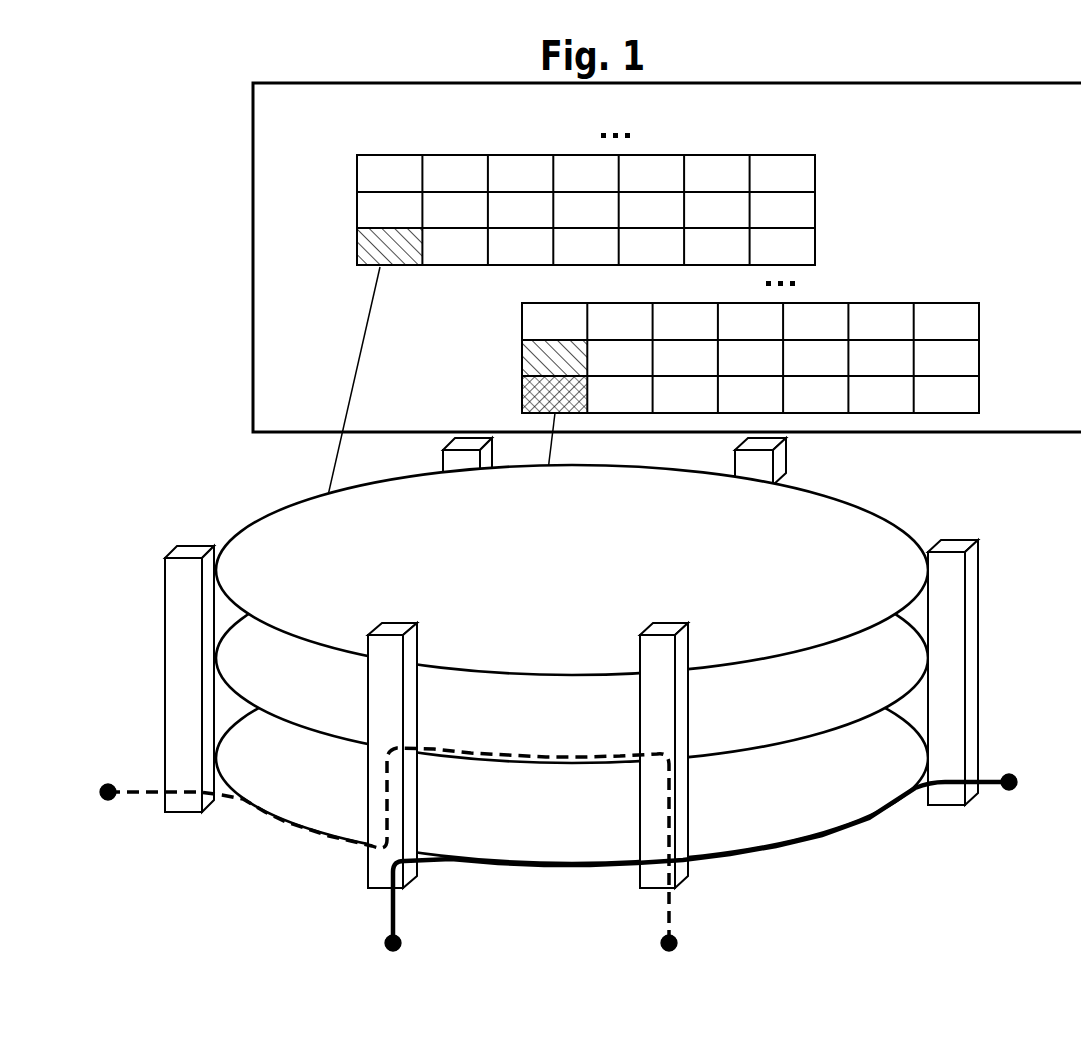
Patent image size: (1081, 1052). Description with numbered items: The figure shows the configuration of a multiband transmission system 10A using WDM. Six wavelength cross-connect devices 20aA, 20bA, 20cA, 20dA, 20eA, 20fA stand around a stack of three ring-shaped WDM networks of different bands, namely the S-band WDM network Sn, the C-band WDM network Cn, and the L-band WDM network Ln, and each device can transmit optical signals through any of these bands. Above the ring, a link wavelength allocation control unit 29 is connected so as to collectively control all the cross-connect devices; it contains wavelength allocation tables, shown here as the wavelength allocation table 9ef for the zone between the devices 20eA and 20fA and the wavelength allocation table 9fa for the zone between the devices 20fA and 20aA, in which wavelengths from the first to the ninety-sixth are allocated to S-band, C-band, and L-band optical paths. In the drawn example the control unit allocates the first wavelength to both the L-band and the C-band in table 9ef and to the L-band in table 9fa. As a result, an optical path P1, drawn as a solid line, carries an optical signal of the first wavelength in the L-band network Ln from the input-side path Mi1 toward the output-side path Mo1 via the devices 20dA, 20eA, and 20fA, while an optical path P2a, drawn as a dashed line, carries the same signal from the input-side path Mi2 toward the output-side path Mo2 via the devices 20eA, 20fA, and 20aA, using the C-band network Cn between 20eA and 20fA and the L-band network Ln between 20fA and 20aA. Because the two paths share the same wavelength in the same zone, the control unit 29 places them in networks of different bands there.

The link wavelength allocation control unit 29 is at (253, 118).
The wavelength allocation table 9fa is at (815, 205).
The wavelength allocation table 9ef is at (979, 357).
The multiband transmission system 10A is at (876, 470).
The wavelength cross-connect device 20aA is at (165, 590).
The wavelength cross-connect device 20bA is at (443, 465).
The wavelength cross-connect device 20cA is at (735, 465).
The wavelength cross-connect device 20dA is at (978, 590).
The wavelength cross-connect device 20eA is at (690, 645).
The wavelength cross-connect device 20fA is at (417, 645).
The S-band WDM network Sn is at (235, 533).
The C-band WDM network Cn is at (238, 624).
The L-band WDM network Ln is at (233, 727).
The optical path P1 is at (775, 845).
The optical path P2a is at (568, 752).
The path on the output side Mo1 is at (403, 943).
The path on the output side Mo2 is at (108, 801).
The path on the input side Mi1 is at (1009, 791).
The path on the input side Mi2 is at (680, 943).